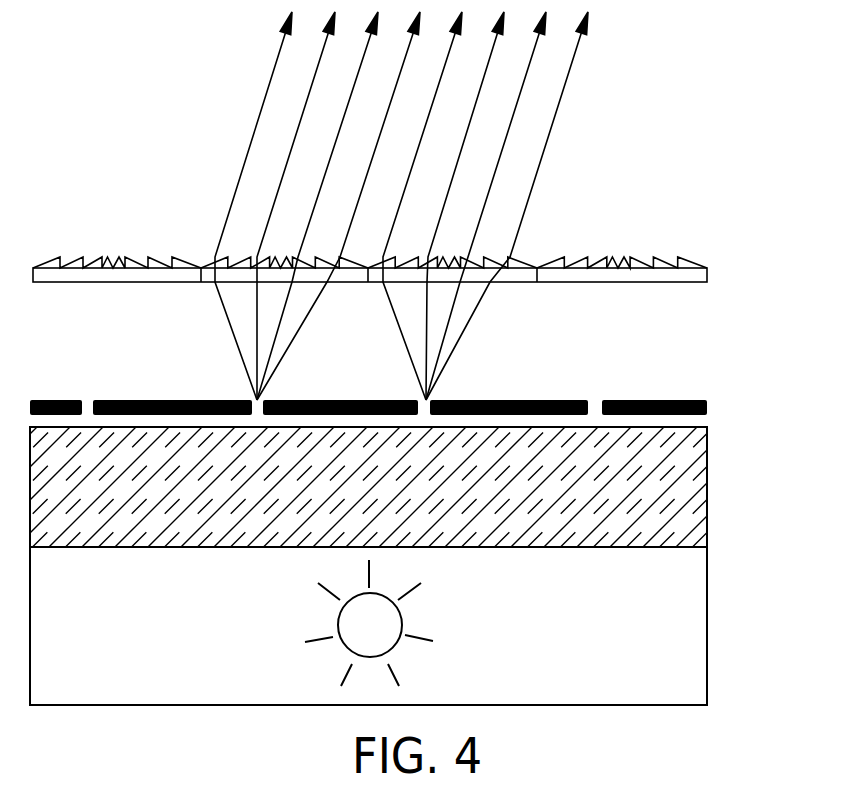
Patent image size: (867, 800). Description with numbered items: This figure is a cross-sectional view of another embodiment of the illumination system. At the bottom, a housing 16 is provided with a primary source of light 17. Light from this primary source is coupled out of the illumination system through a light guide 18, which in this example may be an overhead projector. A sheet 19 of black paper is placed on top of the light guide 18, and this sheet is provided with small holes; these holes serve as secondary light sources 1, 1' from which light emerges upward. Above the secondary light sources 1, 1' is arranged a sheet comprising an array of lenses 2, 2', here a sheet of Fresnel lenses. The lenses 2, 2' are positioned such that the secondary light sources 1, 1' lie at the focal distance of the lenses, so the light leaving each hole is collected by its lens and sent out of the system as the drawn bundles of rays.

The secondary light source 1 is at (298, 206).
The secondary light source 1' is at (485, 206).
The lens 2 is at (370, 221).
The lens 2' is at (452, 220).
The housing 16 is at (698, 636).
The primary source of light 17 is at (400, 615).
The light guide 18 is at (697, 497).
The sheet of black paper 19 is at (707, 409).